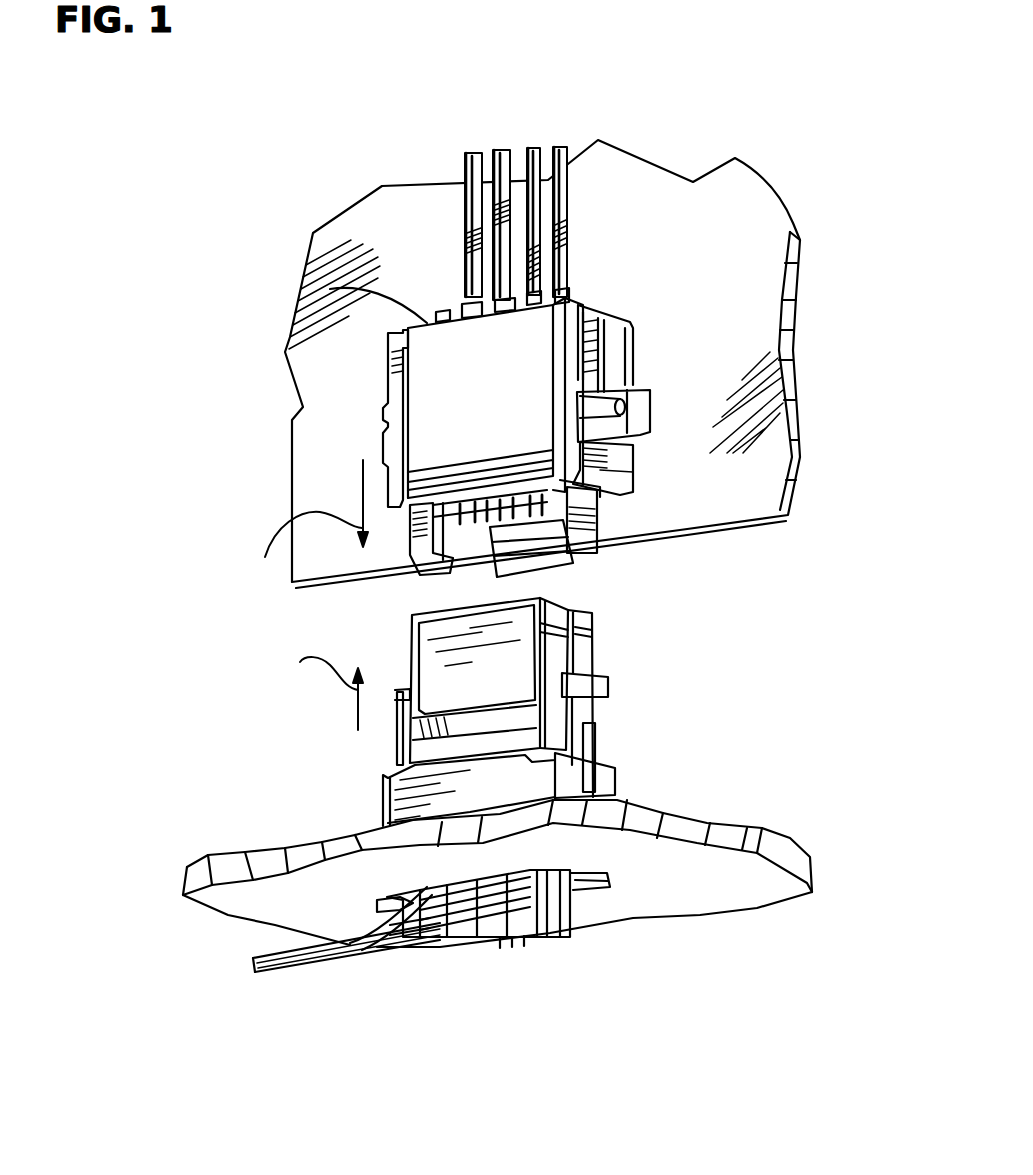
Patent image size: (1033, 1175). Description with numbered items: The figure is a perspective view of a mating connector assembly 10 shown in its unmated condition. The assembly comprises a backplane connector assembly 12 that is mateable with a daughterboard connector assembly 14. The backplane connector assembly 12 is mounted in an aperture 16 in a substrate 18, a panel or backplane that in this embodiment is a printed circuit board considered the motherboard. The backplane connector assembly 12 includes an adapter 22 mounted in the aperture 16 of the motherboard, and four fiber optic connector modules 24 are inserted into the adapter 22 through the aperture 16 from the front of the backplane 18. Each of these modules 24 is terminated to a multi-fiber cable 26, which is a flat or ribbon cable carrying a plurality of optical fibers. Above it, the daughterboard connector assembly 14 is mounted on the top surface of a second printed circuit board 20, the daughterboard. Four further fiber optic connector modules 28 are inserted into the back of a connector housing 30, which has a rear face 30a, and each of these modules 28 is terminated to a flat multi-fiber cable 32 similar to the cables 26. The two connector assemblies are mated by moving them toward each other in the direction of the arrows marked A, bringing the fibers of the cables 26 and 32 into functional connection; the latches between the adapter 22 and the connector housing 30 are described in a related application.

The mating connector assembly 10 is at (282, 642).
The backplane connector assembly 12 is at (362, 765).
The daughterboard connector assembly 14 is at (370, 433).
The aperture 16 is at (397, 900).
The substrate 18 is at (677, 903).
The second printed circuit board 20 is at (590, 158).
The adapter 22 is at (620, 768).
The fiber optic connector modules 24 is at (495, 948).
The multi-fiber cable 26 is at (392, 927).
The fiber optic connector modules 28 is at (443, 307).
The connector housing 30 is at (533, 375).
The rear face 30a is at (335, 289).
The multi-fiber cable 32 is at (558, 143).